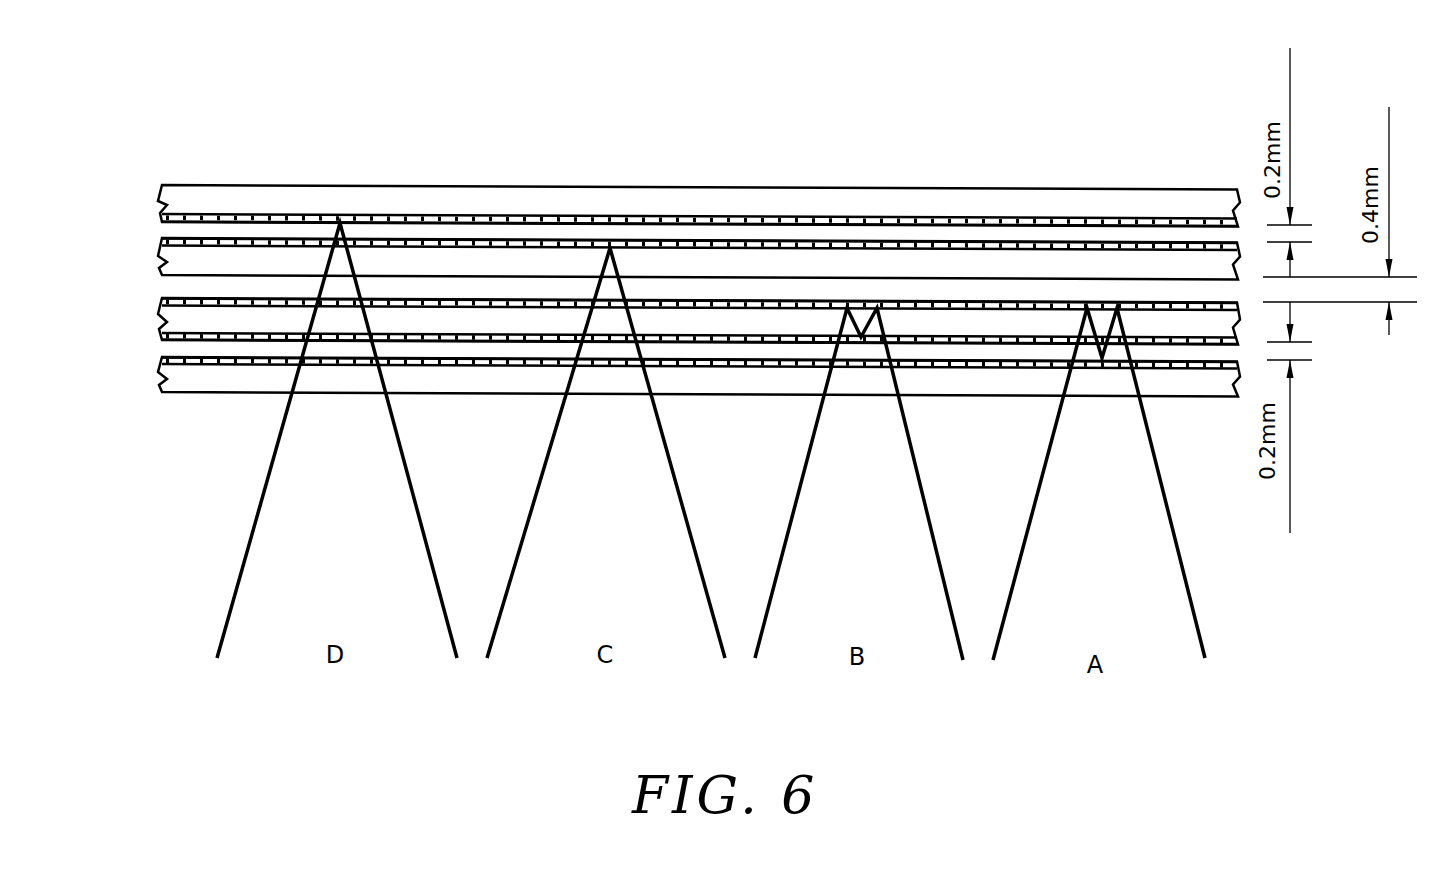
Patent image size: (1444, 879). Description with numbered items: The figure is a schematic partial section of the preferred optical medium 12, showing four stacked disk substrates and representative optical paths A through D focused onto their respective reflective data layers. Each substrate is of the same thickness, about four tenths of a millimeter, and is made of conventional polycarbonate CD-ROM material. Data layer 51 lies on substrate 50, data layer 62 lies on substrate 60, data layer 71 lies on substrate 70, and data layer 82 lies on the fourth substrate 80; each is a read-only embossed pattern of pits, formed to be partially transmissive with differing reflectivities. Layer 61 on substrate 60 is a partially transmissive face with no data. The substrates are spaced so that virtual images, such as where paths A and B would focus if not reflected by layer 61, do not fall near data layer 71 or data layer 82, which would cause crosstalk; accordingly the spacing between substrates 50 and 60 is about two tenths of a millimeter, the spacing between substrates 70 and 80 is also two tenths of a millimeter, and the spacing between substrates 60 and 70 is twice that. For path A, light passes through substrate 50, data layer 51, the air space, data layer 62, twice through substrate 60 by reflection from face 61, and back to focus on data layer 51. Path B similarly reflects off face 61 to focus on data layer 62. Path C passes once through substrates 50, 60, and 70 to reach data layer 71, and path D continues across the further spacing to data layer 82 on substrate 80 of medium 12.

The optical medium 12 is at (966, 102).
The substrate 50 is at (167, 379).
The data layer 51 is at (189, 366).
The substrate 60 is at (167, 322).
The partially transmissive layer 61 is at (288, 302).
The data layer 62 is at (205, 333).
The substrate 70 is at (167, 263).
The data layer 71 is at (280, 240).
The substrate 80 is at (167, 205).
The data layer 82 is at (204, 210).